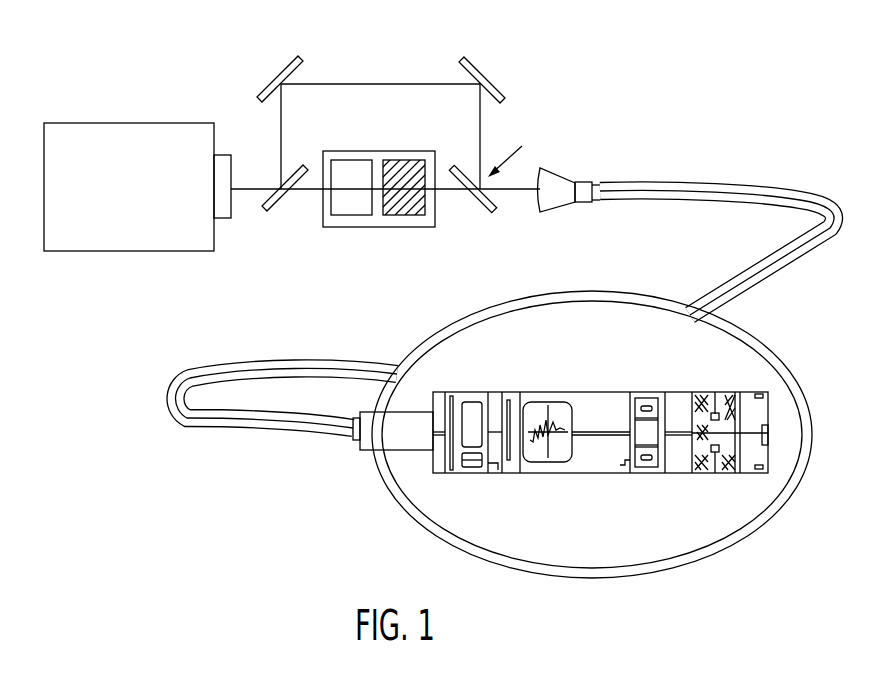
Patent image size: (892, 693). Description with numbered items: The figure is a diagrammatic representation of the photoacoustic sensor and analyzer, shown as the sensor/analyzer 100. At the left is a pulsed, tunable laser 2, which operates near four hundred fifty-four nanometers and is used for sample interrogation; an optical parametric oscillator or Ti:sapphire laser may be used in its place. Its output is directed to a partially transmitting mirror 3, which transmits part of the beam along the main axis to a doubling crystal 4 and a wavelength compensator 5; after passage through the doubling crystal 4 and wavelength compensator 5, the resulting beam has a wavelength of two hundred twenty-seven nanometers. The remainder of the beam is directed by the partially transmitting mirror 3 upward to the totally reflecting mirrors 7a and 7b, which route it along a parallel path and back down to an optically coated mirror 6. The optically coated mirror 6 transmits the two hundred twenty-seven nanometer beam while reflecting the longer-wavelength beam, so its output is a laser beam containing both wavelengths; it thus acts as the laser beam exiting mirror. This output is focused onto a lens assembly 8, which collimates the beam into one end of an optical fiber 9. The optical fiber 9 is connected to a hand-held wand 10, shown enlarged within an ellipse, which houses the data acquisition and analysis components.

The sensor/analyzer 100 is at (586, 60).
The pulsed, tunable laser 2 is at (99, 131).
The partially transmitting mirror 3 is at (278, 208).
The doubling crystal 4 is at (358, 209).
The wavelength compensator 5 is at (410, 208).
The optically coated mirror 6 is at (478, 214).
The totally reflecting mirror 7a is at (263, 83).
The totally reflecting mirror 7b is at (478, 57).
The lens assembly 8 is at (565, 178).
The optical fiber 9 is at (677, 182).
The hand-held wand 10 is at (757, 340).